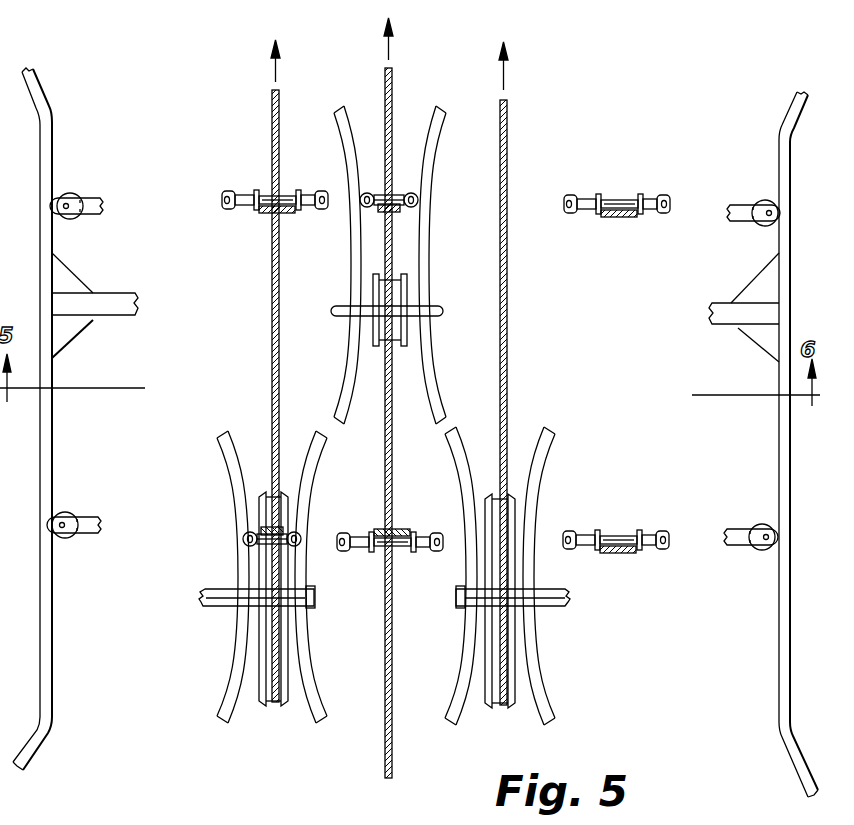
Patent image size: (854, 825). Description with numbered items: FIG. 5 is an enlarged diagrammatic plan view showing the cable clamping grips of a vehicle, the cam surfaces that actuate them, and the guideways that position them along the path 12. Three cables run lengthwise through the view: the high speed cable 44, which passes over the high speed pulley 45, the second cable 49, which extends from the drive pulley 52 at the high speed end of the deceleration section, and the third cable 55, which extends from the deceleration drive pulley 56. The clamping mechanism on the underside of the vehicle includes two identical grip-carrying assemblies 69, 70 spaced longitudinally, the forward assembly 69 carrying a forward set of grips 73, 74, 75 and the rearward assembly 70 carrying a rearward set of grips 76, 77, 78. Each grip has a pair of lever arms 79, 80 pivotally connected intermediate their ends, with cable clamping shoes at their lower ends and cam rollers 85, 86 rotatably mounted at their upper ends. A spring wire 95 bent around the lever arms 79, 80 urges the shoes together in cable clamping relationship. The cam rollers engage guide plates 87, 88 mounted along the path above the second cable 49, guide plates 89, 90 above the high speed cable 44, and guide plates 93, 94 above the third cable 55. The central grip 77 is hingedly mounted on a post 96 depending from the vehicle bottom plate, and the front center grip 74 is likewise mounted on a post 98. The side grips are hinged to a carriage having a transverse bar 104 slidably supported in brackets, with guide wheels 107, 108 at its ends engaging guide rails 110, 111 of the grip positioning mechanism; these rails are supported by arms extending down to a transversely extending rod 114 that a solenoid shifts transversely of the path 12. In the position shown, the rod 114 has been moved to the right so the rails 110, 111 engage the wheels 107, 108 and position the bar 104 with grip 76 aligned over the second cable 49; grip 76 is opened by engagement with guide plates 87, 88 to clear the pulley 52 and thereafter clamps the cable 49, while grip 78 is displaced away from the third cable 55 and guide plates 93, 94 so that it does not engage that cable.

The path 12 is at (580, 88).
The high speed cable 44 is at (392, 84).
The high speed pulley 45 is at (402, 292).
The second cable 49 is at (272, 106).
The drive pulley 52 is at (258, 645).
The third cable 55 is at (508, 115).
The deceleration drive pulley 56 is at (516, 649).
The grip-carrying assembly 69 is at (526, 156).
The grip-carrying assembly 70 is at (664, 525).
The grip 73 is at (286, 192).
The front center grip 74 is at (404, 194).
The grip 75 is at (622, 195).
The grip 76 is at (248, 533).
The central grip 77 is at (375, 552).
The grip 78 is at (624, 553).
The lever arm 79 is at (258, 193).
The lever arm 80 is at (306, 192).
The cam roller 85 is at (227, 193).
The cam roller 86 is at (321, 210).
The guide plate 87 is at (226, 694).
The guide plate 88 is at (320, 684).
The guide plate 89 is at (431, 350).
The guide plate 90 is at (348, 356).
The guide plate 93 is at (452, 456).
The guide plate 94 is at (546, 456).
The spring wire 95 is at (262, 211).
The post 96 is at (396, 530).
The post 98 is at (400, 210).
The transverse bar 104 is at (100, 199).
The guide wheel 107 is at (70, 193).
The guide wheel 108 is at (765, 200).
The guide rail 110 is at (38, 83).
The guide rail 111 is at (792, 100).
The rod 114 is at (127, 293).